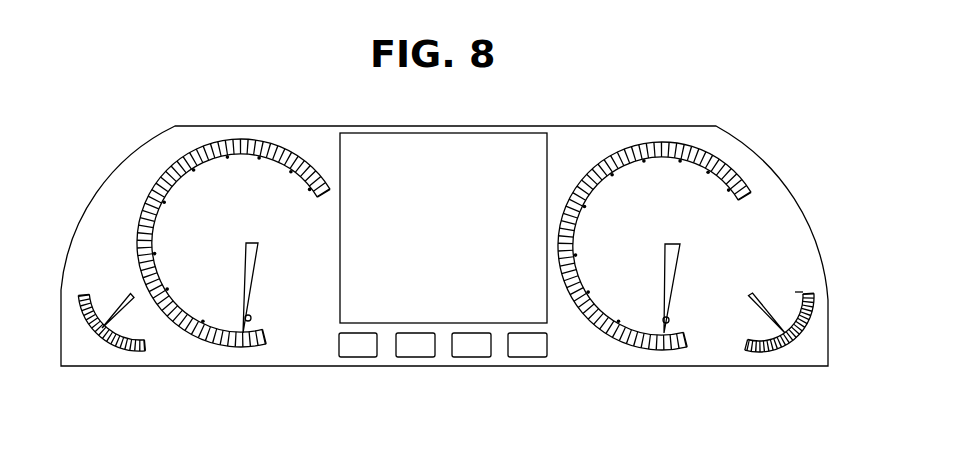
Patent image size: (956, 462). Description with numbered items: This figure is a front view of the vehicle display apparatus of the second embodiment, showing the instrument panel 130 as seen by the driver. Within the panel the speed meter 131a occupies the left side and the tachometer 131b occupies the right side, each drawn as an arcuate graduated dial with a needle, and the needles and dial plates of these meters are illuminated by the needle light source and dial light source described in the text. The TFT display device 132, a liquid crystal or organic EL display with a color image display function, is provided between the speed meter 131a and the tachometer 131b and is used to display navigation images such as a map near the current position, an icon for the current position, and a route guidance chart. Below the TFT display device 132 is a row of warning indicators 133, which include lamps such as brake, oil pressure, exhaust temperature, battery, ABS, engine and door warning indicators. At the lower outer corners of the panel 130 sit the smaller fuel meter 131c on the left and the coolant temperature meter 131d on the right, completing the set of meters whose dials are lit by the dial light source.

The instrument panel (meter unit) 130 is at (683, 127).
The speed meter 131a is at (280, 313).
The tachometer 131b is at (693, 310).
The fuel meter 131c is at (91, 343).
The coolant temperature meter 131d is at (793, 342).
The TFT display device 132 is at (452, 127).
The warning indicators 133 is at (521, 350).